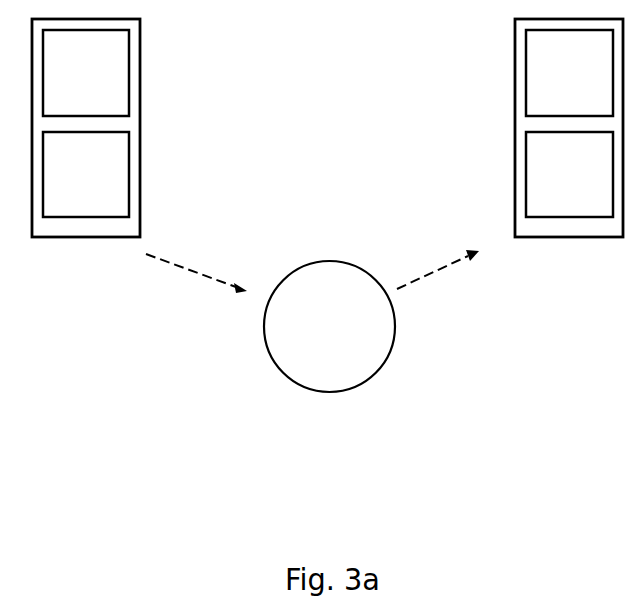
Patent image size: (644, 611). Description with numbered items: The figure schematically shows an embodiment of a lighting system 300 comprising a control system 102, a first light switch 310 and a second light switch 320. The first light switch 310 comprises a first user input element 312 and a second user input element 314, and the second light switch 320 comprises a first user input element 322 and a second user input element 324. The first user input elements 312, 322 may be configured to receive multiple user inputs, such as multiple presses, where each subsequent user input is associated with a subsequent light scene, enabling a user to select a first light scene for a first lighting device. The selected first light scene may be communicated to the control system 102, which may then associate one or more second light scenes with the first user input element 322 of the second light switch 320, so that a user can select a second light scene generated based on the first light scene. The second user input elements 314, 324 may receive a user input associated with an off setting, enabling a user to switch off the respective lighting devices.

The lighting system 300 is at (350, 474).
The first light switch 310 is at (140, 212).
The first user input element 312 is at (108, 68).
The second user input element 314 is at (108, 168).
The second light switch 320 is at (515, 221).
The first user input element 322 is at (547, 73).
The second user input element 324 is at (547, 157).
The control system 102 is at (362, 361).